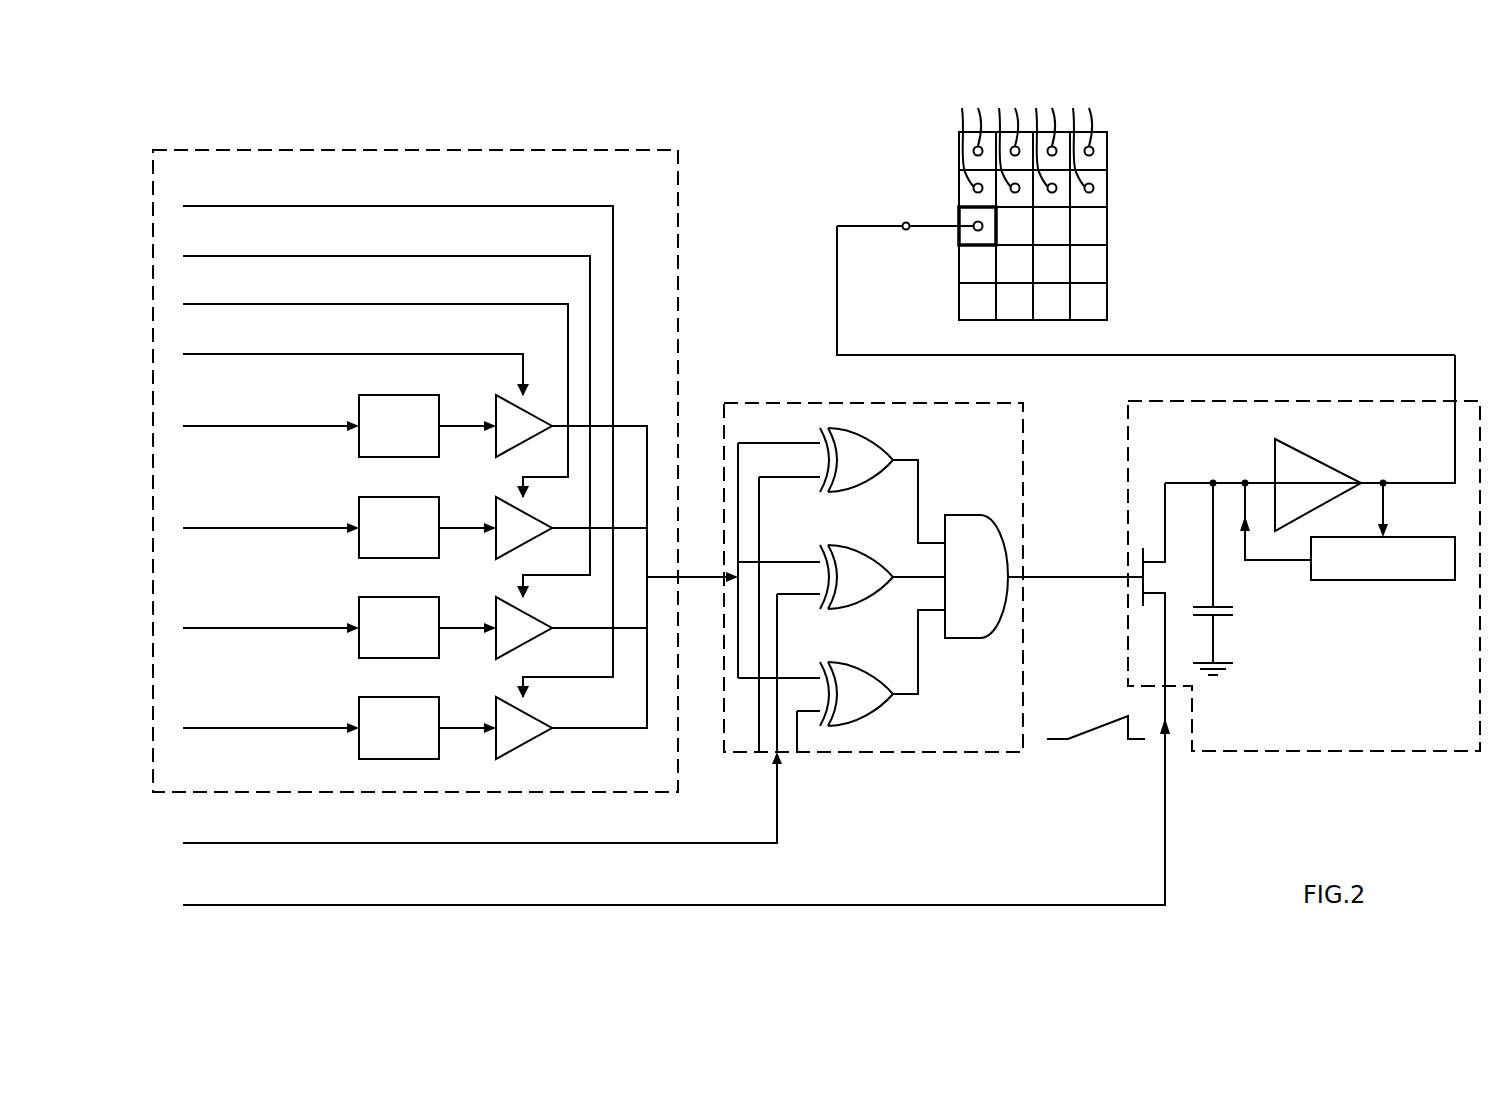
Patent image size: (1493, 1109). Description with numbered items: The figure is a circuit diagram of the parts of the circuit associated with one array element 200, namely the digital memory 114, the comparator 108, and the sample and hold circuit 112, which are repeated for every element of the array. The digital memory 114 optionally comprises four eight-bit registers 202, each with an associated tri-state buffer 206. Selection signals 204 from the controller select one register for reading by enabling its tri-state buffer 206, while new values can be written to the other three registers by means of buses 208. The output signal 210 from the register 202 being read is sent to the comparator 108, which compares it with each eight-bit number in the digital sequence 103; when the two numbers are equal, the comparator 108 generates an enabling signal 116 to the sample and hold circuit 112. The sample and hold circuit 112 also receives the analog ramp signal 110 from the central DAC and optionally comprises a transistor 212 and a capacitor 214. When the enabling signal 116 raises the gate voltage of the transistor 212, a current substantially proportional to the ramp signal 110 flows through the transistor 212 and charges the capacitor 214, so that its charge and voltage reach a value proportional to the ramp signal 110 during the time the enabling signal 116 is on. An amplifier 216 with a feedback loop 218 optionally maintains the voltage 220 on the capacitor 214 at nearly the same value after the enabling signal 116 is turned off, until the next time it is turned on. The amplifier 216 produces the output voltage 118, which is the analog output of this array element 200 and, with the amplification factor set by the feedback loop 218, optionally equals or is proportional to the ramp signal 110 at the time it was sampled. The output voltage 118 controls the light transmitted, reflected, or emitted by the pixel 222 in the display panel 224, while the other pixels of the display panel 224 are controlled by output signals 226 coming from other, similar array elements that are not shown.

The array element 200 is at (1360, 128).
The digital memory 114 is at (405, 150).
The selection signals 204 is at (358, 206).
The buses 208 is at (272, 428).
The registers 202 is at (388, 457).
The tri-state buffer 206 is at (494, 505).
The output signal 210 is at (636, 527).
The comparator 108 is at (887, 753).
The digital sequence 103 is at (450, 845).
The analog ramp signal 110 is at (450, 908).
The enabling signal 116 is at (1072, 580).
The sample and hold circuit 112 is at (1295, 753).
The transistor 212 is at (1295, 420).
The voltage on capacitor 220 is at (1291, 472).
The capacitor 214 is at (1234, 611).
The amplifier 216 is at (1328, 464).
The feedback loop 218 is at (1345, 582).
The output voltage 118 is at (902, 224).
The display panel 224 is at (1051, 194).
The output signals 226 is at (1113, 110).
The pixel 222 is at (966, 235).